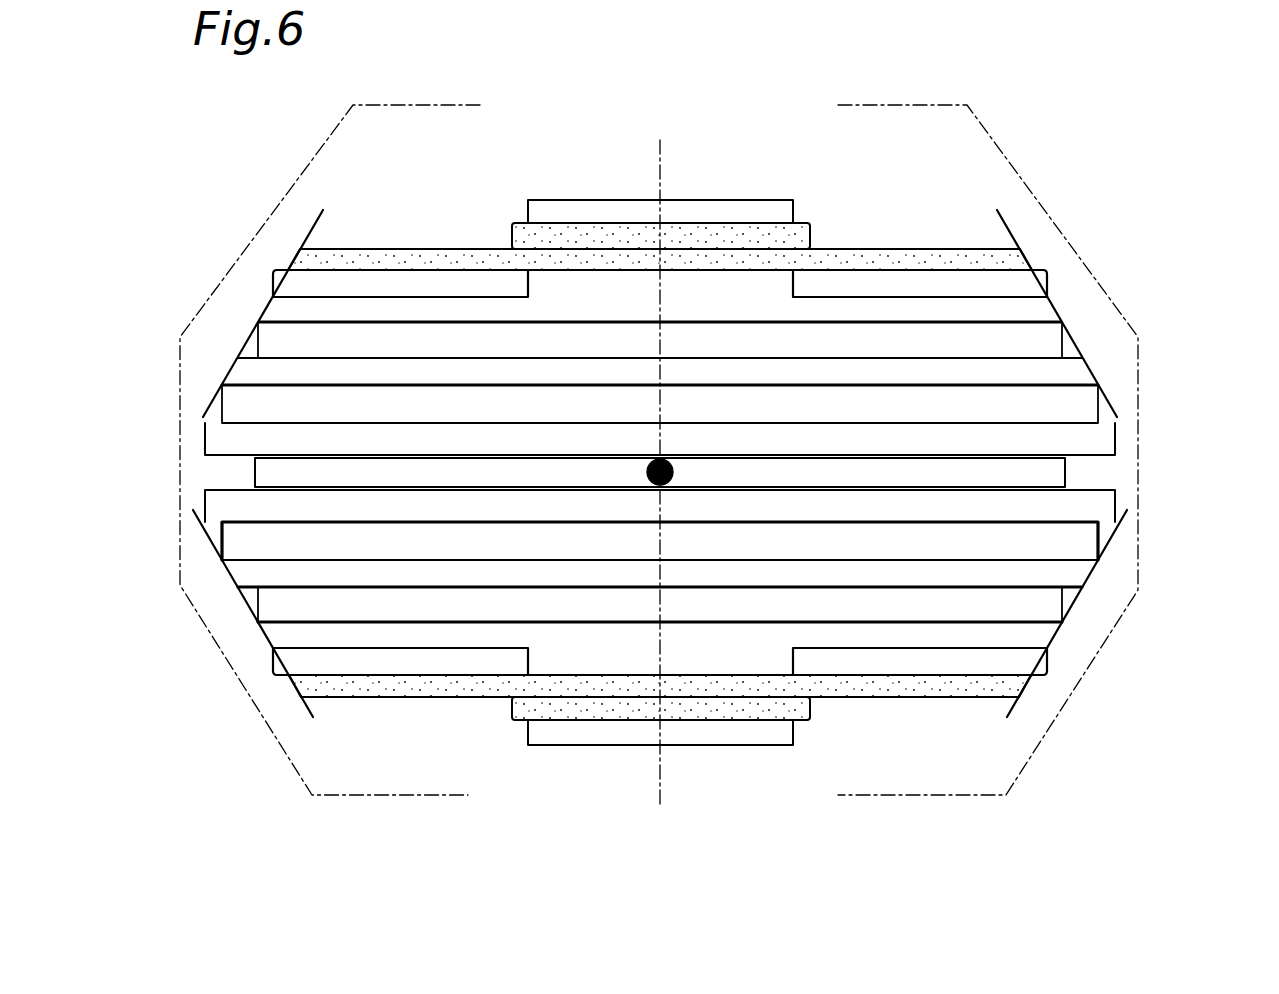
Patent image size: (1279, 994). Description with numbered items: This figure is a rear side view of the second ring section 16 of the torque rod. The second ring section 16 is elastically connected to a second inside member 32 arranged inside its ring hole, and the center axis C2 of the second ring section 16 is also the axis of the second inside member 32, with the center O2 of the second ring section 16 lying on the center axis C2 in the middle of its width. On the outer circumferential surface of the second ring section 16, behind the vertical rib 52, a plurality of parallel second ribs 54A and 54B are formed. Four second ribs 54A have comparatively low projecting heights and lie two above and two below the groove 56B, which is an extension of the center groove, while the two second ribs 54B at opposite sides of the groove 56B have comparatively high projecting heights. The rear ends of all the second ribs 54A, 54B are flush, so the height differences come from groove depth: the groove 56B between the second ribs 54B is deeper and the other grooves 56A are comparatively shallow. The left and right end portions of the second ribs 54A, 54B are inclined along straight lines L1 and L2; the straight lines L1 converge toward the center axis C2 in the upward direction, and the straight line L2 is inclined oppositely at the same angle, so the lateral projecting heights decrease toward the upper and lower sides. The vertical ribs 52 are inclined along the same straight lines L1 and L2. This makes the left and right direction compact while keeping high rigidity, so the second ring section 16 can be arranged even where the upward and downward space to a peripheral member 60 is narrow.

The second ring section 16 is at (440, 236).
The second inside member 32 is at (762, 207).
The vertical rib 52 is at (250, 345).
The second ribs 54A is at (280, 290).
The second ribs 54B is at (223, 437).
The grooves 56A is at (268, 318).
The groove 56B is at (237, 470).
The peripheral member 60 is at (323, 143).
The center axis of the second ring section C2 is at (658, 461).
The center of the second ring section O2 is at (673, 482).
The straight line L1 is at (660, 301).
The straight line L2 is at (660, 635).